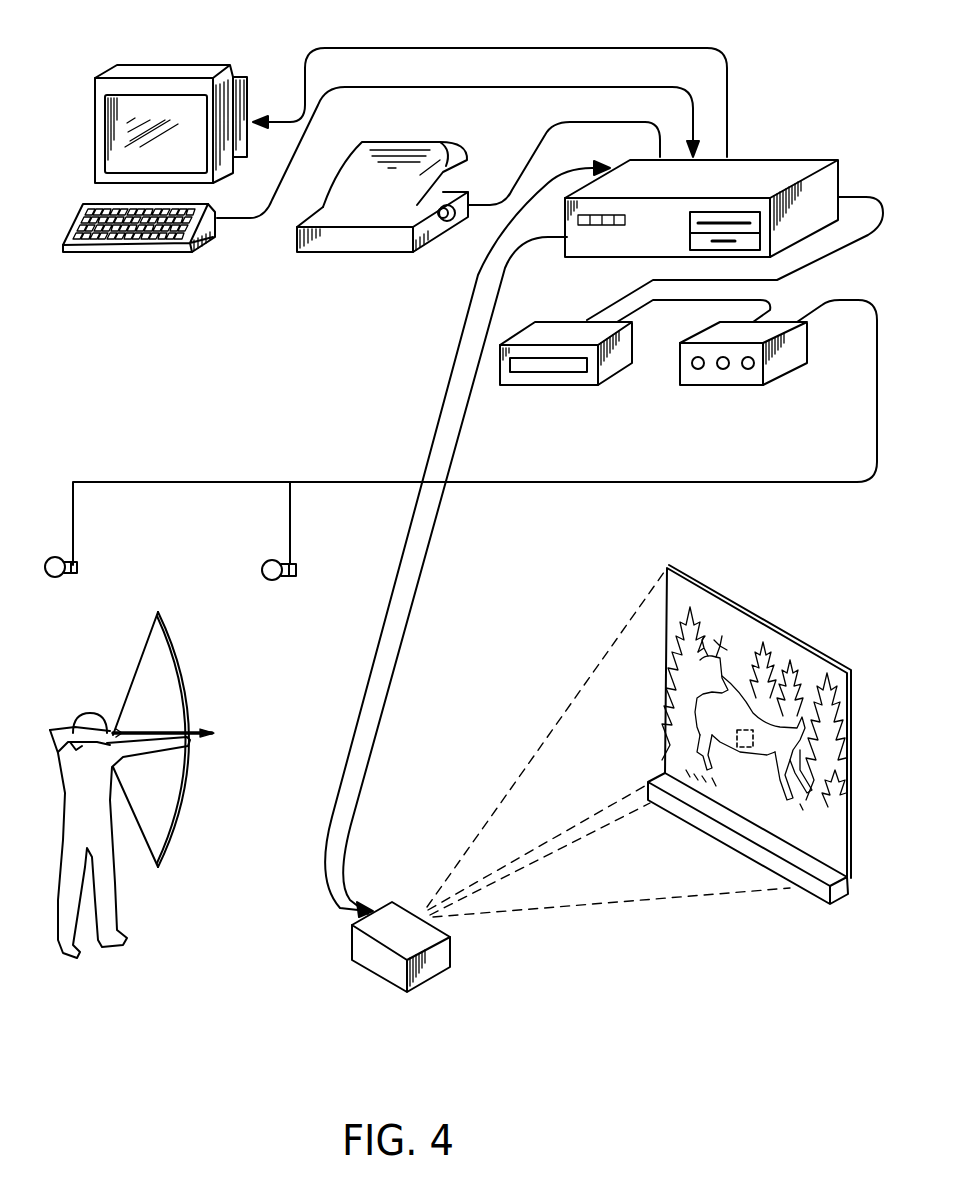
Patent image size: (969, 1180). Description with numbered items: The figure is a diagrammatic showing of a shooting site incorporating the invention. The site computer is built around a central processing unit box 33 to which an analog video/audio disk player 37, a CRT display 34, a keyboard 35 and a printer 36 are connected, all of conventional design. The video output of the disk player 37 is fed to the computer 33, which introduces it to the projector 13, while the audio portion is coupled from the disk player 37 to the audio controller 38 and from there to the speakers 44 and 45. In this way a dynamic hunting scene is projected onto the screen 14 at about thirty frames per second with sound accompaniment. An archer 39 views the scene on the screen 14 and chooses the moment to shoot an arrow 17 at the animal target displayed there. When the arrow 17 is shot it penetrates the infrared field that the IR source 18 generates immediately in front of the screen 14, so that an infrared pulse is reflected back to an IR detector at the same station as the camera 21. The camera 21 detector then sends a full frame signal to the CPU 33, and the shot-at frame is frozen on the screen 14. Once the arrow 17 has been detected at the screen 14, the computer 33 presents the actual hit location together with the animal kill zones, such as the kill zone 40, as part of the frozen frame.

The projector 13 is at (432, 970).
The screen 14 is at (787, 637).
The arrow 17 is at (197, 730).
The IR source 18 is at (807, 893).
The camera 21 is at (498, 993).
The central processing unit box 33 is at (770, 157).
The CRT display 34 is at (183, 66).
The keyboard 35 is at (192, 247).
The printer 36 is at (382, 247).
The analog video/audio disk player 37 is at (570, 322).
The audio controller 38 is at (760, 378).
The archer 39 is at (93, 680).
The kill zone 40 is at (738, 748).
The speaker 44 is at (77, 567).
The speaker 45 is at (281, 562).